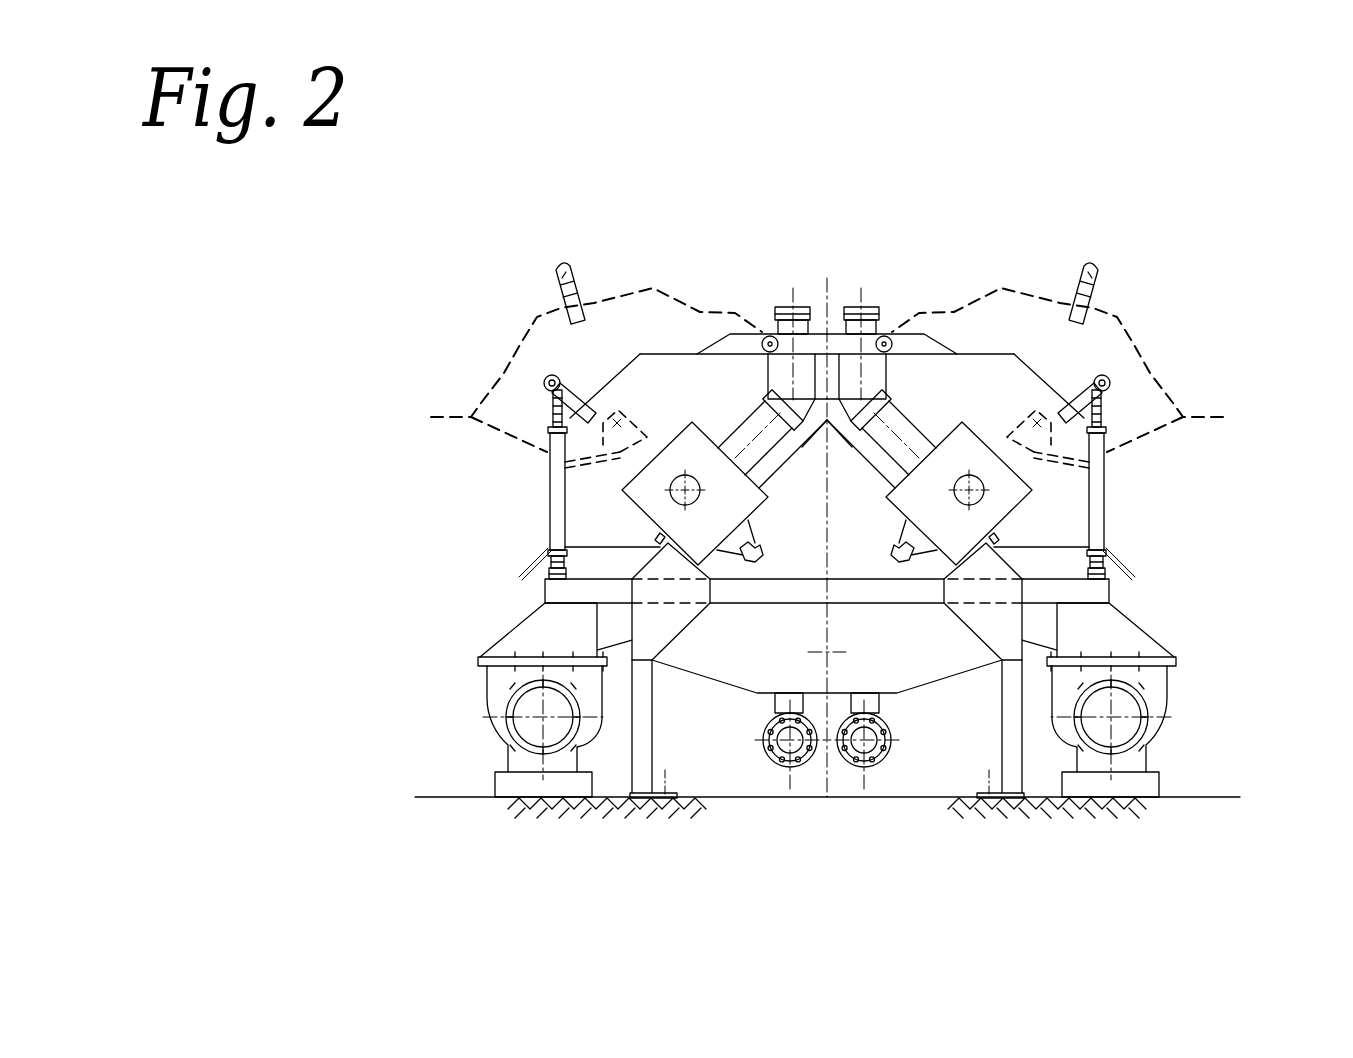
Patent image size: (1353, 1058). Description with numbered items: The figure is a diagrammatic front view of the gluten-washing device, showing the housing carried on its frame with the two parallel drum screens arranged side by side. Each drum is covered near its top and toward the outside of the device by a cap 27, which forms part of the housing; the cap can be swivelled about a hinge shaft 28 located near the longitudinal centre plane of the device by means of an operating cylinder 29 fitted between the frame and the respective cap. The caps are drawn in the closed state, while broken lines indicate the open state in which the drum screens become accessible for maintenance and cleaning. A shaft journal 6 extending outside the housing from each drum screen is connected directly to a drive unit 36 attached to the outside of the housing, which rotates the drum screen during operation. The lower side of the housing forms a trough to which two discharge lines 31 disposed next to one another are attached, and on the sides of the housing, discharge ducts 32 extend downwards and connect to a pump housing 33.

The shaft journal 6 is at (670, 493).
The cap 27 is at (1127, 358).
The hinge shaft 28 is at (878, 335).
The operating cylinder 29 is at (553, 482).
The discharge line 31 is at (863, 767).
The discharge duct 32 is at (553, 622).
The pump housing 33 is at (497, 688).
The drive unit 36 is at (683, 458).